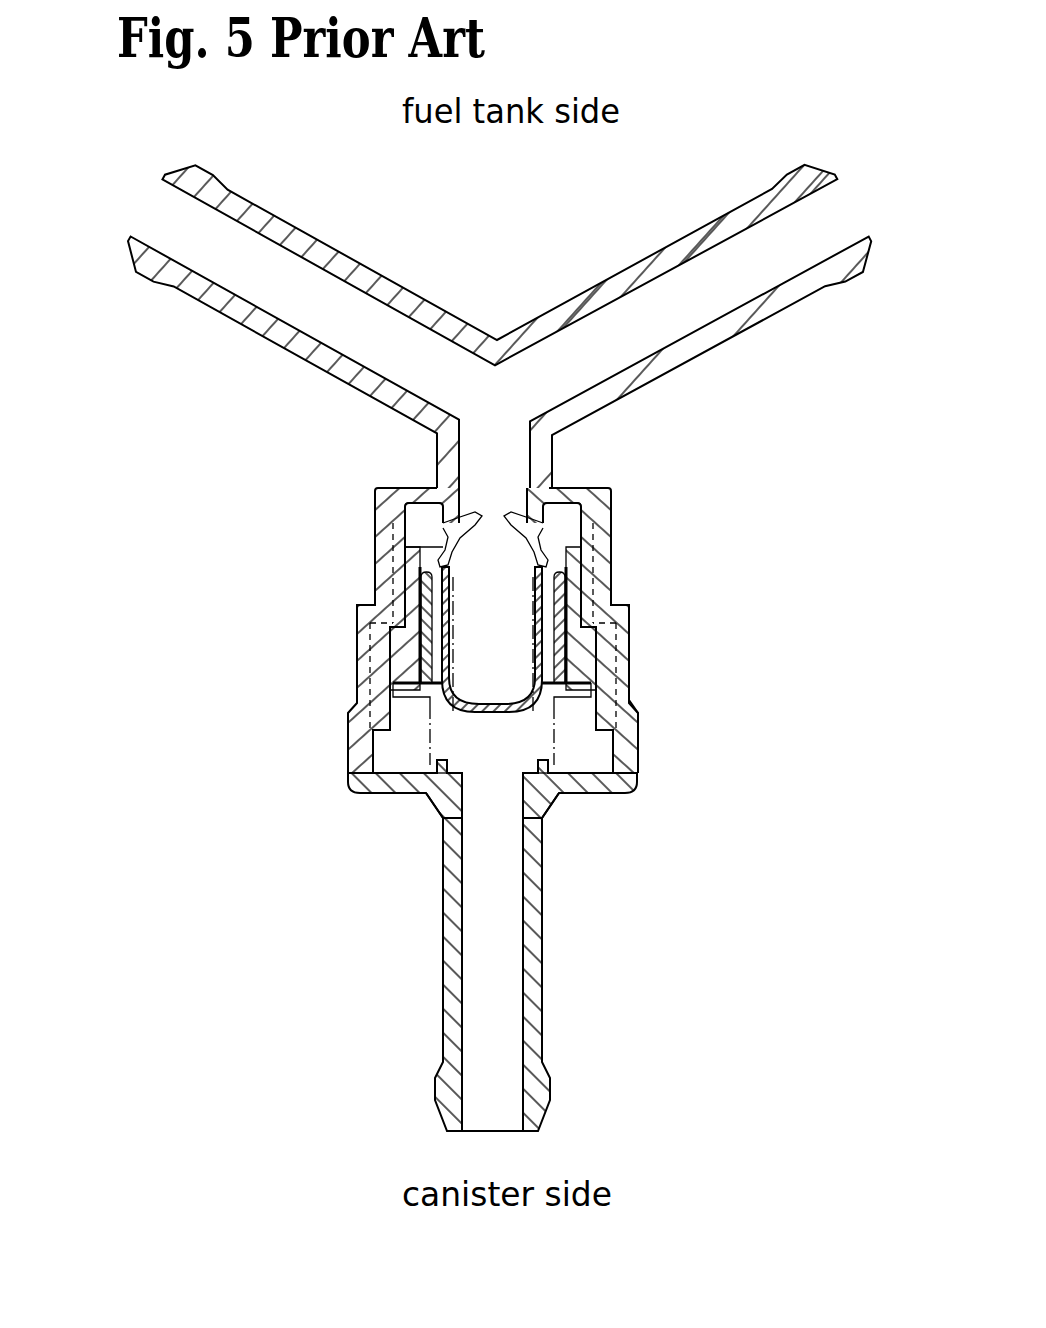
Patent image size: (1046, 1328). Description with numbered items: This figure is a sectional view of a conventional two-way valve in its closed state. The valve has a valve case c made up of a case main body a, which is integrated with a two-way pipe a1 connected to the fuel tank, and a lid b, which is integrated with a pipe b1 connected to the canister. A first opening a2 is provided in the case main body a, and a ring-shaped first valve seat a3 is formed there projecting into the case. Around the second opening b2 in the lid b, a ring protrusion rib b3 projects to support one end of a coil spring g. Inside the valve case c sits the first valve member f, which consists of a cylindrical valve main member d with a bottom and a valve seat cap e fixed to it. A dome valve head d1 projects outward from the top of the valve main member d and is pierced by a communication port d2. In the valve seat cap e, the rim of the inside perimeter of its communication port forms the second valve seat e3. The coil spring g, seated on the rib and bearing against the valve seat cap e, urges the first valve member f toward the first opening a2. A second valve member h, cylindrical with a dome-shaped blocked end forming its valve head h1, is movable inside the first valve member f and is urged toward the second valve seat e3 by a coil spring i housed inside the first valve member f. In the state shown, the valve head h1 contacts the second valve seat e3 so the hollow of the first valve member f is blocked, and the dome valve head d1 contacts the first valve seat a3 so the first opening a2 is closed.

The case main body a is at (593, 633).
The two-way pipe a1 is at (530, 338).
The first opening a2 is at (508, 492).
The first valve seat a3 is at (565, 548).
The lid b is at (598, 797).
The pipe b1 is at (533, 988).
The second opening b2 is at (493, 790).
The ring protrusion rib b3 is at (542, 812).
The valve case c is at (662, 662).
The valve main member d is at (583, 587).
The dome valve head d1 is at (450, 492).
The communication port d2 is at (478, 510).
The valve seat cap e is at (585, 712).
The second valve seat e3 is at (393, 730).
The first valve member f is at (413, 530).
The coil spring g is at (442, 702).
The second valve member h is at (420, 700).
The valve head h1 is at (560, 747).
The coil spring i is at (457, 592).